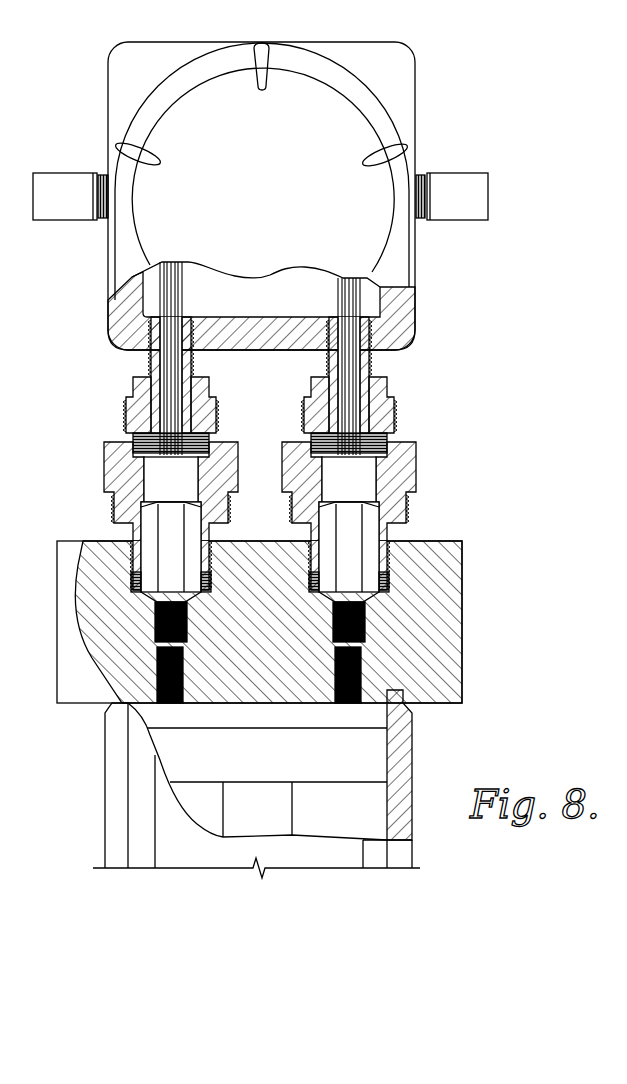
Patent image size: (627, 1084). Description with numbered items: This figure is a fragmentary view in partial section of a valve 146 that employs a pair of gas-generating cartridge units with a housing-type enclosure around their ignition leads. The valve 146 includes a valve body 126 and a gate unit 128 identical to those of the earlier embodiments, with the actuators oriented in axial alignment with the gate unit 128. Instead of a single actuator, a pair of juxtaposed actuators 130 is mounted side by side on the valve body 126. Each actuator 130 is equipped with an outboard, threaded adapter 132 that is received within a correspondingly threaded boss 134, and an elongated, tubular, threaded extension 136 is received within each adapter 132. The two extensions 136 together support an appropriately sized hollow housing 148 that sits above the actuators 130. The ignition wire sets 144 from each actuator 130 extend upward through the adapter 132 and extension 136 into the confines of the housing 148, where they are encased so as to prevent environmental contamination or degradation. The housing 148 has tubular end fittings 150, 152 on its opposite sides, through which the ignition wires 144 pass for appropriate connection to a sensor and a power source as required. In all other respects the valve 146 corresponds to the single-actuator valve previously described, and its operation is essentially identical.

The valve body 126 is at (482, 562).
The gate unit 128 is at (427, 742).
The actuator 130 is at (88, 452).
The threaded adapter 132 is at (207, 378).
The threaded boss 134 is at (130, 402).
The tubular threaded extension 136 is at (150, 358).
The ignition wires 144 is at (328, 291).
The valve 146 is at (492, 496).
The housing 148 is at (408, 95).
The tubular end fitting 150 is at (72, 173).
The tubular end fitting 152 is at (453, 172).